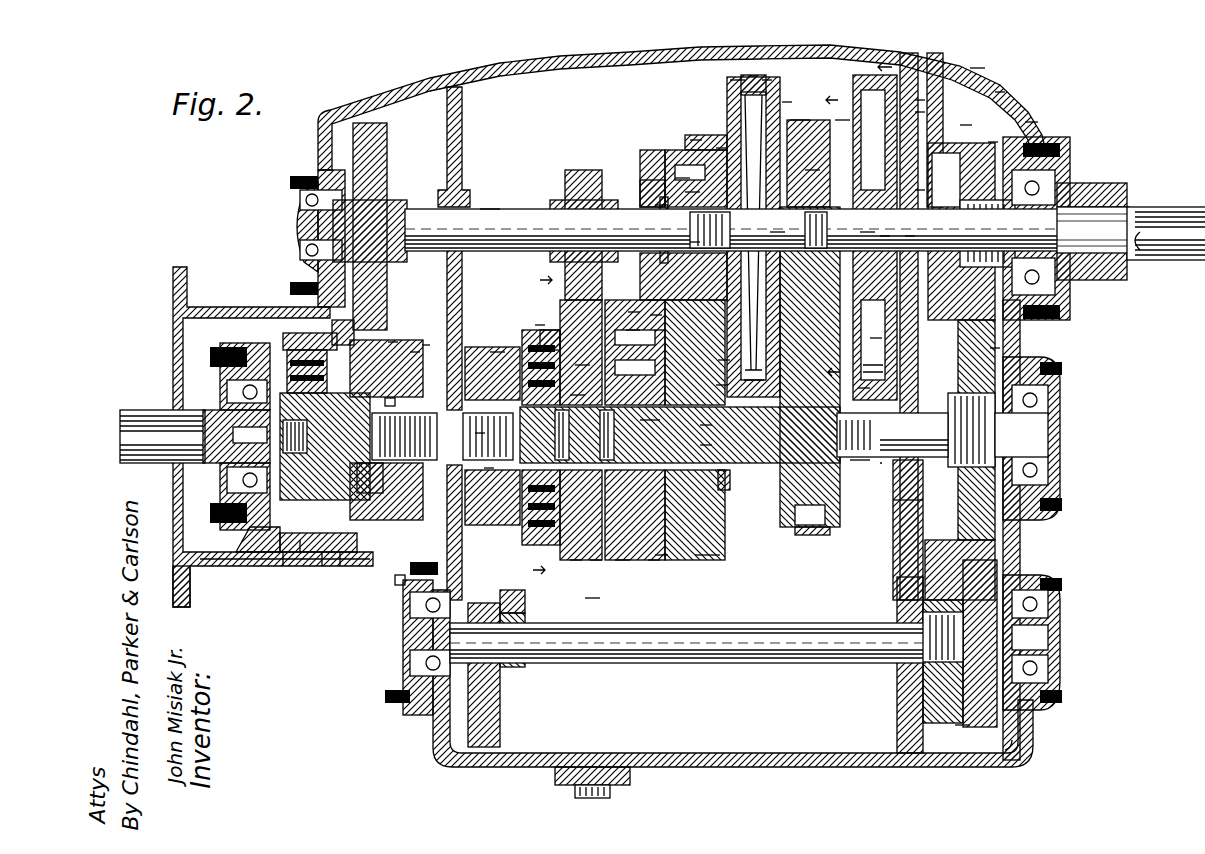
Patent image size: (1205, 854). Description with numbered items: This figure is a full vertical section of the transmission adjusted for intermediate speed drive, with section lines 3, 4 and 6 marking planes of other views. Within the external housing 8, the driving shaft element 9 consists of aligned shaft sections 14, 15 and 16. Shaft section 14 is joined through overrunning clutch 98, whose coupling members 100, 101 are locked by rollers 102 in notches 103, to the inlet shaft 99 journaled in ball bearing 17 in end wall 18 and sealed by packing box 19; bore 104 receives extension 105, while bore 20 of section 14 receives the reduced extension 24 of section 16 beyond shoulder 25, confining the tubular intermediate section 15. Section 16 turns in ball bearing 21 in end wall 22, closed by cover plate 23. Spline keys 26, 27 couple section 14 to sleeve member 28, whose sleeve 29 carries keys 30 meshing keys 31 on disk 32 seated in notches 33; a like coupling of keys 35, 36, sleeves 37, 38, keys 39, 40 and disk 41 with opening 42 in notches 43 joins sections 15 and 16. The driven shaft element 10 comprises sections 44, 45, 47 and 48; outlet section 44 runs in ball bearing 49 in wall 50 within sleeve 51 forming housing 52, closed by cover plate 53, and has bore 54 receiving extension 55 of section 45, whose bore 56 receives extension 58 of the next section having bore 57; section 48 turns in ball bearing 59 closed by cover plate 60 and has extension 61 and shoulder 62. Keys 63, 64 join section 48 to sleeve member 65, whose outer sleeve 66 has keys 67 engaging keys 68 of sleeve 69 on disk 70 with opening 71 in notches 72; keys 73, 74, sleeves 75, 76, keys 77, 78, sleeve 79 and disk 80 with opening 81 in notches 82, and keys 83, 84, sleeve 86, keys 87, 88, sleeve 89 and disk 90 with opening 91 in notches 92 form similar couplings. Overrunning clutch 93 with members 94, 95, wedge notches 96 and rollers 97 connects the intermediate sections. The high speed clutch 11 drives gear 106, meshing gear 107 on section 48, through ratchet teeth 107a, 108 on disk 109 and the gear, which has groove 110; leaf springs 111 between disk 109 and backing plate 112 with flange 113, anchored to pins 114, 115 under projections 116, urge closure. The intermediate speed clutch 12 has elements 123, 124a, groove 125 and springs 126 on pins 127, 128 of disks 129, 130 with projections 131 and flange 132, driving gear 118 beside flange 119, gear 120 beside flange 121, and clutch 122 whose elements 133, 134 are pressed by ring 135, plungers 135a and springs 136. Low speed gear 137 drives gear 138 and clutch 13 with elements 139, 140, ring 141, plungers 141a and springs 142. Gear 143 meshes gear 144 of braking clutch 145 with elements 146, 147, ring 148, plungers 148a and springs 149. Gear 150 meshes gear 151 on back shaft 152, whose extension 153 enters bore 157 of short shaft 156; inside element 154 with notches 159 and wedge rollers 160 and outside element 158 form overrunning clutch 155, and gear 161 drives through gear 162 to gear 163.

The output shaft 3 is at (885, 247).
The clutch section 4 is at (839, 236).
The section line 6 is at (536, 424).
The external housing 8 is at (500, 60).
The driving shaft element 9 is at (494, 207).
The driven shaft element 10 is at (886, 470).
The high speed clutch 11 is at (855, 462).
The intermediate speed clutch 12 is at (782, 465).
The low speed clutch 13 is at (538, 325).
The first shaft section 14 is at (918, 190).
The intermediate shaft section 15 is at (658, 232).
The third shaft section 16 is at (527, 209).
The ball bearing 17 is at (1062, 175).
The end wall 18 is at (1048, 137).
The packing box 19 is at (1125, 188).
The axial bore 20 is at (960, 240).
The ball bearing 21 is at (300, 212).
The end wall 22 is at (318, 150).
The cover plate 23 is at (298, 247).
The reduced axial extension 24 is at (960, 222).
The annular shoulder 25 is at (688, 242).
The spline keys 26 is at (877, 240).
The keys 27 is at (902, 240).
The sleeve member 28 is at (872, 178).
The coaxial sleeve 29 is at (920, 112).
The internal keys 30 is at (859, 232).
The keys 31 is at (807, 230).
The disk 32 is at (878, 338).
The tangential notches 33 is at (876, 322).
The keys 35 is at (767, 232).
The keys 36 is at (753, 237).
The sleeve member 37 is at (762, 160).
The sleeve 38 is at (700, 150).
The keys 39 is at (680, 178).
The keys 40 is at (655, 315).
The disk 41 is at (650, 300).
The central opening 42 is at (660, 205).
The notches 43 is at (703, 230).
The outlet shaft section 44 is at (140, 410).
The first intermediate shaft section 45 is at (365, 485).
The third intermediate shaft section 47 is at (490, 432).
The shaft section 48 is at (937, 467).
The ball bearing 49 is at (212, 508).
The wall 50 is at (240, 566).
The sleeve 51 is at (192, 588).
The housing 52 is at (233, 307).
The annular cover plate 53 is at (215, 362).
The axial bore 54 is at (227, 482).
The axial extension 55 is at (227, 392).
The bore 56 is at (395, 492).
The axial bore 57 is at (488, 428).
The axial extension 58 is at (420, 355).
The ball bearing 59 is at (1060, 400).
The cover plate 60 is at (1060, 447).
The reduced axial extension 61 is at (592, 492).
The annular shoulder 62 is at (696, 445).
The spline keys 63 is at (696, 425).
The keys 64 is at (720, 385).
The sleeve member 65 is at (722, 360).
The outer concentric sleeve 66 is at (630, 298).
The internal keys 67 is at (660, 330).
The keys 68 is at (632, 312).
The sleeve 69 is at (630, 330).
The disk 70 is at (575, 395).
The opening 71 is at (596, 435).
The notches 72 is at (650, 432).
The keys 73 is at (580, 365).
The keys 74 is at (565, 435).
The sleeve 75 is at (680, 435).
The sleeve 76 is at (510, 325).
The keys 77 is at (515, 335).
The keys 78 is at (526, 633).
The sleeve 79 is at (575, 562).
The disk 80 is at (470, 485).
The opening 81 is at (497, 352).
The notches 82 is at (489, 462).
The keys 83 is at (386, 402).
The keys 84 is at (320, 396).
The sleeve 86 is at (297, 303).
The keys 87 is at (290, 337).
The keys 88 is at (322, 567).
The sleeve 89 is at (340, 567).
The disk 90 is at (285, 527).
The opening 91 is at (325, 446).
The notches 92 is at (236, 436).
The overrunning clutch 93 is at (398, 336).
The inner coupling member 94 is at (410, 610).
The outer coupling member 95 is at (415, 350).
The wedge notches 96 is at (432, 352).
The wedge rollers 97 is at (425, 345).
The overrunning clutch 98 is at (974, 130).
The inlet shaft 99 is at (1175, 205).
The inner coupling member 100 is at (992, 142).
The outer coupling member 101 is at (1030, 122).
The rollers 102 is at (1000, 92).
The notches 103 is at (966, 125).
The axial bore 104 is at (1042, 215).
The axial extension 105 is at (1042, 242).
The gear 106 is at (805, 120).
The gear 107 is at (820, 535).
The ratchet teeth 107a is at (920, 100).
The ratchet teeth 108 is at (843, 120).
The annular disk 109 is at (862, 388).
The annular groove 110 is at (812, 170).
The compression leaf springs 111 is at (906, 58).
The backing disk 112 is at (937, 68).
The annular peripheral flange 113 is at (870, 75).
The pin 114 is at (958, 348).
The pin 115 is at (978, 68).
The lateral projections 116 is at (893, 502).
The gear 118 is at (676, 150).
The peripheral flange 119 is at (650, 183).
The gear 120 is at (715, 552).
The peripheral flange 121 is at (730, 478).
The clutch 122 is at (700, 558).
The clutch element 123 is at (722, 148).
The clutch element 124a is at (696, 140).
The annular groove 125 is at (690, 192).
The compression springs 126 is at (752, 75).
The pin 127 is at (795, 508).
The pin 128 is at (787, 102).
The disk 129 is at (733, 95).
The disk 130 is at (800, 120).
The lateral projections 131 is at (738, 78).
The annular side flange 132 is at (766, 80).
The clutch element 133 is at (712, 520).
The clutch element 134 is at (660, 560).
The ring 135 is at (655, 563).
The plungers 135a is at (686, 342).
The springs 136 is at (572, 345).
The gear 137 is at (580, 170).
The gear 138 is at (620, 565).
The clutch element 139 is at (595, 565).
The clutch element 140 is at (625, 555).
The ring 141 is at (548, 330).
The plungers 141a is at (590, 600).
The springs 142 is at (490, 345).
The gear 143 is at (388, 148).
The gear 144 is at (395, 580).
The automatic clutch 145 is at (300, 567).
The clutch element 146 is at (410, 569).
The clutch element 147 is at (345, 535).
The ring 148 is at (336, 330).
The plungers 148a is at (226, 345).
The springs 149 is at (288, 567).
The gear 150 is at (508, 610).
The gear 151 is at (500, 730).
The back shaft 152 is at (745, 663).
The reduced axial extension 153 is at (1060, 605).
The inside element 154 is at (905, 582).
The overrunning clutch 155 is at (910, 708).
The short shaft 156 is at (1050, 630).
The axial bore 157 is at (1060, 655).
The outside element 158 is at (945, 540).
The notches 159 is at (962, 727).
The wedge rollers 160 is at (905, 562).
The gear 161 is at (1012, 748).
The gear 162 is at (1062, 362).
The gear 163 is at (996, 348).